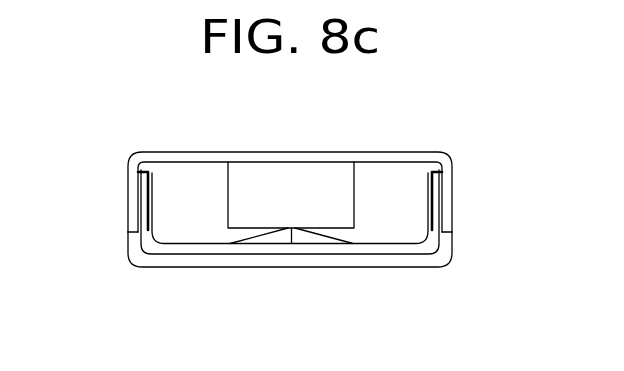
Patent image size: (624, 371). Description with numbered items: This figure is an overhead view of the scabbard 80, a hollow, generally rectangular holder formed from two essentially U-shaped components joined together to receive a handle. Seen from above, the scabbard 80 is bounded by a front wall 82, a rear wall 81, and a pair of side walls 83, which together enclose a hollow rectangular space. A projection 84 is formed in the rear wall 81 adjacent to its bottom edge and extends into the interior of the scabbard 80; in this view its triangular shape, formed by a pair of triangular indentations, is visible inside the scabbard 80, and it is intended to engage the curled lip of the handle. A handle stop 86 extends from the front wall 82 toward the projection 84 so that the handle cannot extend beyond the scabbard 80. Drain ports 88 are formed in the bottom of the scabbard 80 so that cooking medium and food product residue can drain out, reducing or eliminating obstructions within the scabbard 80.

The scabbard 80 is at (324, 274).
The rear wall 81 is at (408, 268).
The front wall 82 is at (170, 151).
The side walls 83 is at (128, 198).
The projection 84 is at (273, 238).
The handle stop 86 is at (320, 182).
The drain ports 88 is at (163, 218).